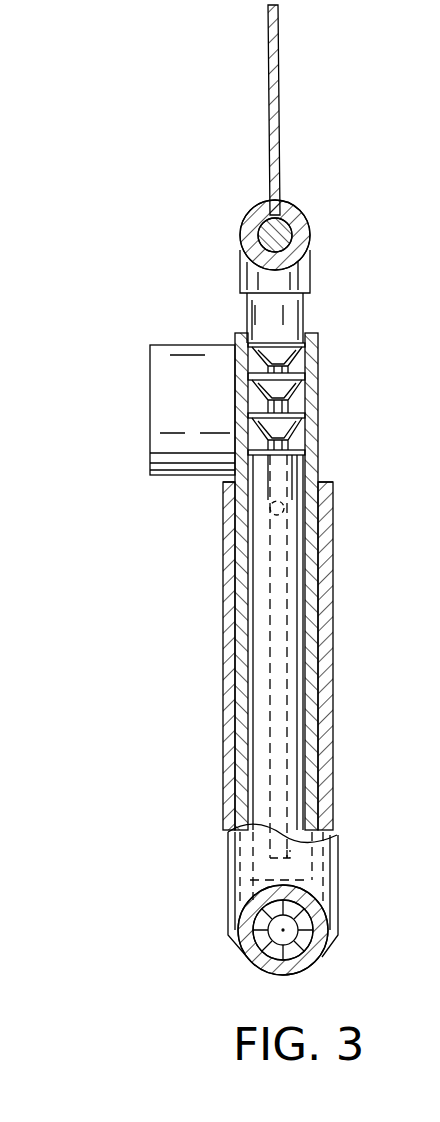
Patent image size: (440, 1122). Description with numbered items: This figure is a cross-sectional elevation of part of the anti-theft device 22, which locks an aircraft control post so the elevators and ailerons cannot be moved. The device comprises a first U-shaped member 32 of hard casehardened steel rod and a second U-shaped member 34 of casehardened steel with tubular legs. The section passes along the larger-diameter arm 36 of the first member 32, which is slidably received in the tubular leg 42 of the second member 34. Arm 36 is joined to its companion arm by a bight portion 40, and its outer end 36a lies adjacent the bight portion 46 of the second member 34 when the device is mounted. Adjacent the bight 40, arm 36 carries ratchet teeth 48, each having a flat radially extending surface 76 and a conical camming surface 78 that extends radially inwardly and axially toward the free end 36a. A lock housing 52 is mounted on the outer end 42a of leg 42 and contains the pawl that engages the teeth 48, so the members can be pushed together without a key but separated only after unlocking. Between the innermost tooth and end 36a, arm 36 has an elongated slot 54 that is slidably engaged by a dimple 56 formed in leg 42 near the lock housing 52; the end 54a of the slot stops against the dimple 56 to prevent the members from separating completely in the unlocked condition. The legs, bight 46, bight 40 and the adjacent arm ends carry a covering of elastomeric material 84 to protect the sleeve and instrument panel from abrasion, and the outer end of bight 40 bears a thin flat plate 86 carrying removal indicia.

The anti-theft device 22 is at (112, 86).
The first U-shaped member 32 is at (232, 227).
The second U-shaped member 34 is at (218, 913).
The arm 36 is at (298, 645).
The outer end of arm 36a is at (335, 862).
The bight portion 40 is at (283, 223).
The tubular leg 42 is at (313, 532).
The outer end of leg 42a is at (238, 335).
The bight portion 46 is at (300, 910).
The ratchet teeth 48 is at (300, 380).
The lock housing 52 is at (168, 340).
The elongated slot 54 is at (277, 710).
The end of recess 54a is at (268, 853).
The dimple 56 is at (273, 510).
The flat radially extending surface 76 is at (308, 410).
The conical camming surface 78 is at (290, 350).
The elastomeric material covering 84 is at (255, 217).
The flat plate 86 is at (268, 30).